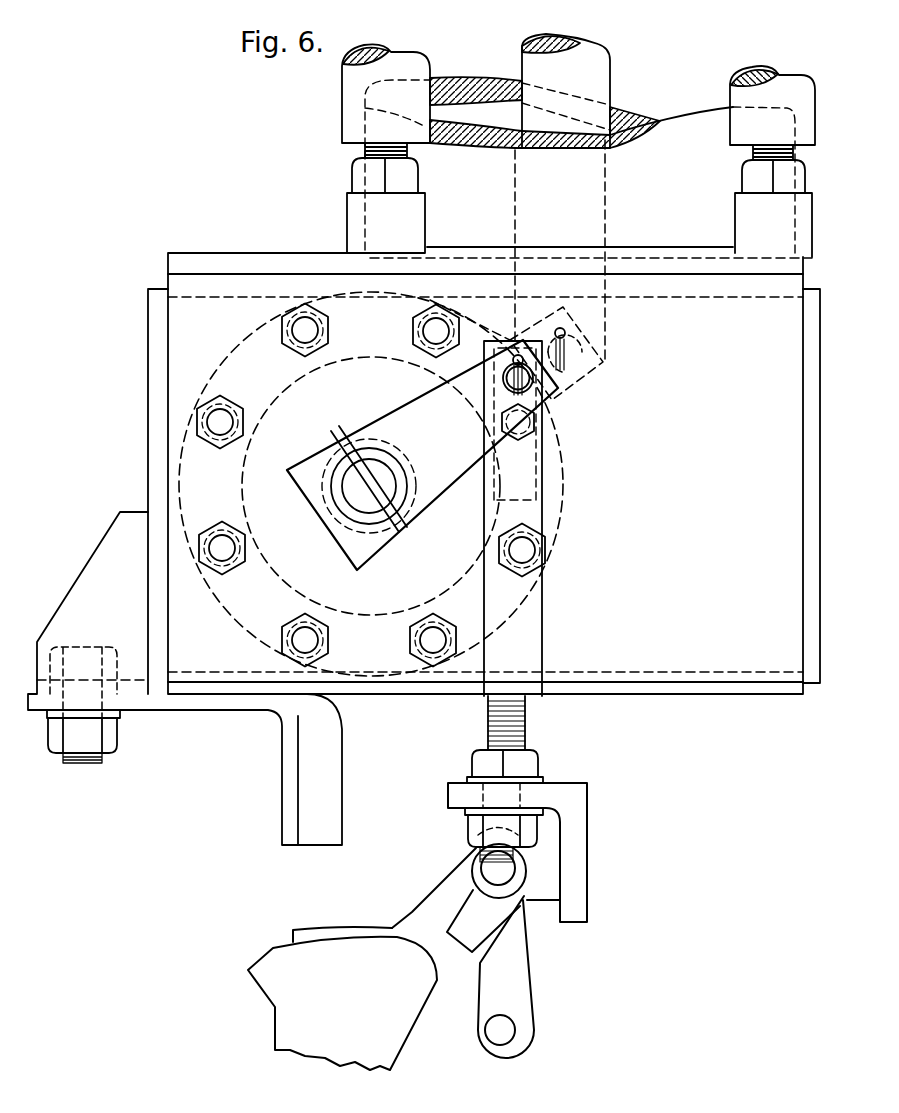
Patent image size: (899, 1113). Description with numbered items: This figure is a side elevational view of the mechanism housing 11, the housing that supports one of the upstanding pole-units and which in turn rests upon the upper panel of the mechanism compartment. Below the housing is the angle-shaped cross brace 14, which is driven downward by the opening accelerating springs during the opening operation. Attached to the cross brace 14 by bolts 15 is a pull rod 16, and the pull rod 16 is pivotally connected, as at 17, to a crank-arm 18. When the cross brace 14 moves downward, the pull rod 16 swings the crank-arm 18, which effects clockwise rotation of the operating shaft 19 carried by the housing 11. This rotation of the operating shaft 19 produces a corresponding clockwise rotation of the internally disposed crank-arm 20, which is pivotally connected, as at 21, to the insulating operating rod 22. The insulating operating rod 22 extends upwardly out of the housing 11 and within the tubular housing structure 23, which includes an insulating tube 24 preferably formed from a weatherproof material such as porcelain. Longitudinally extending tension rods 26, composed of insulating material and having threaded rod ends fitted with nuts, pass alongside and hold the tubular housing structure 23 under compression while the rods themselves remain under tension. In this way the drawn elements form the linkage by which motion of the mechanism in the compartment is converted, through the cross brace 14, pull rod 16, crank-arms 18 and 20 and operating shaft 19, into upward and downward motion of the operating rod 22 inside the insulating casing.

The mechanism housing 11 is at (178, 344).
The angle-shaped cross brace 14 is at (572, 863).
The bolts 15 is at (500, 720).
The pull rods 16 is at (537, 600).
The pivotal connection 17 is at (508, 389).
The crank-arm 18 is at (430, 389).
The operating shaft 19 is at (366, 506).
The internally disposed crank-arm 20 is at (558, 400).
The pivotal connection 21 is at (604, 363).
The insulating operating rod 22 is at (597, 60).
The tubular housing structure 23 is at (632, 117).
The insulating tube 24 is at (472, 82).
The tension rods 26 is at (350, 107).